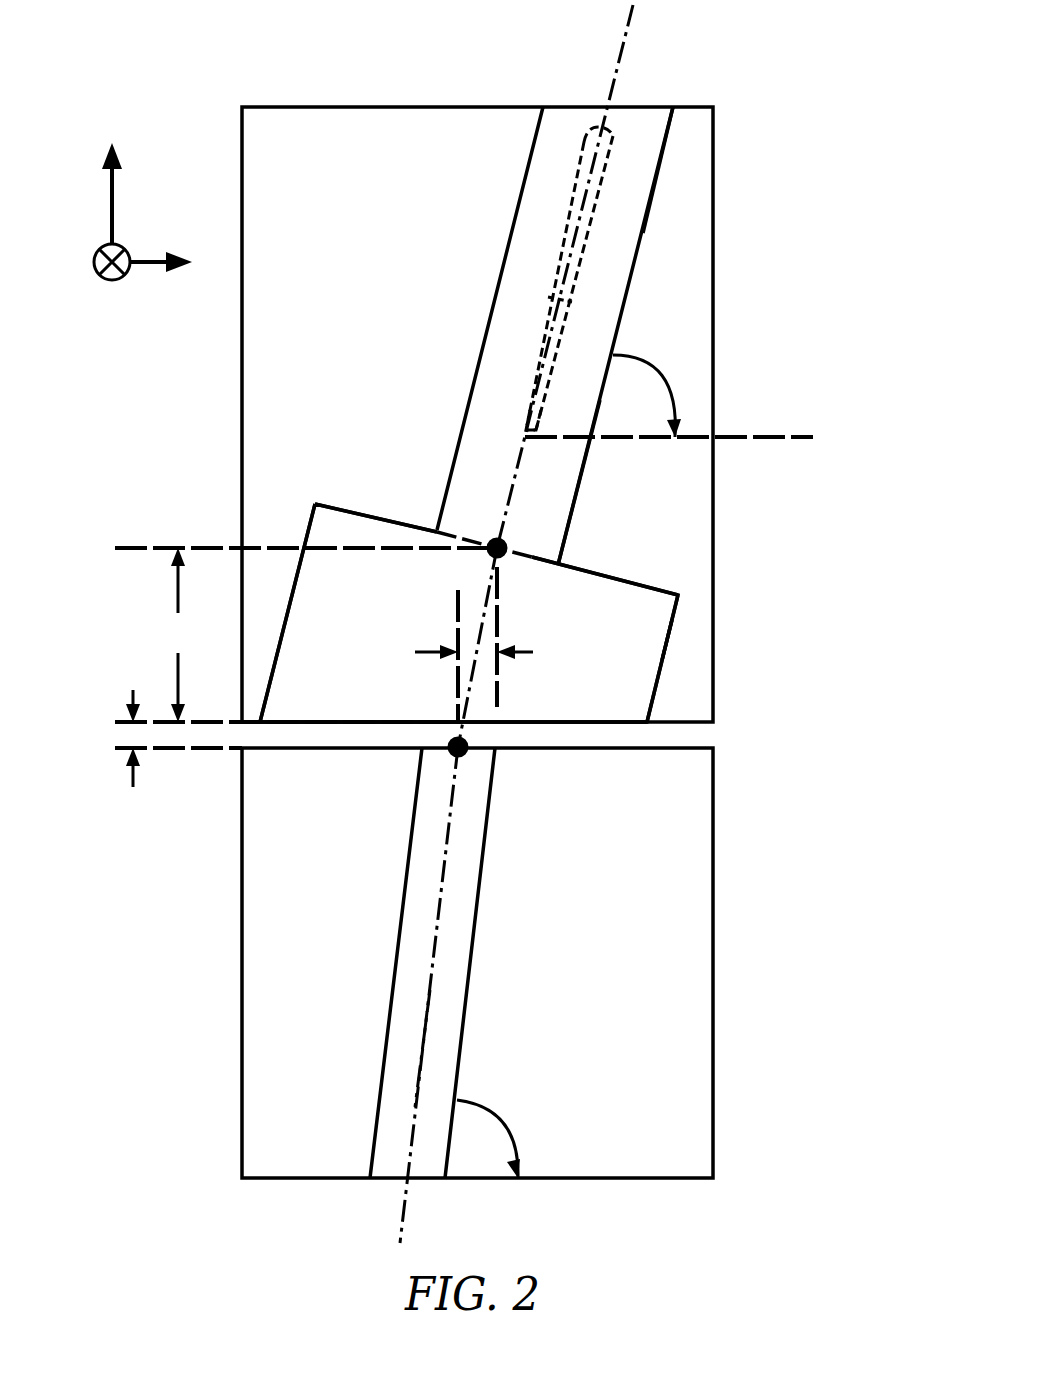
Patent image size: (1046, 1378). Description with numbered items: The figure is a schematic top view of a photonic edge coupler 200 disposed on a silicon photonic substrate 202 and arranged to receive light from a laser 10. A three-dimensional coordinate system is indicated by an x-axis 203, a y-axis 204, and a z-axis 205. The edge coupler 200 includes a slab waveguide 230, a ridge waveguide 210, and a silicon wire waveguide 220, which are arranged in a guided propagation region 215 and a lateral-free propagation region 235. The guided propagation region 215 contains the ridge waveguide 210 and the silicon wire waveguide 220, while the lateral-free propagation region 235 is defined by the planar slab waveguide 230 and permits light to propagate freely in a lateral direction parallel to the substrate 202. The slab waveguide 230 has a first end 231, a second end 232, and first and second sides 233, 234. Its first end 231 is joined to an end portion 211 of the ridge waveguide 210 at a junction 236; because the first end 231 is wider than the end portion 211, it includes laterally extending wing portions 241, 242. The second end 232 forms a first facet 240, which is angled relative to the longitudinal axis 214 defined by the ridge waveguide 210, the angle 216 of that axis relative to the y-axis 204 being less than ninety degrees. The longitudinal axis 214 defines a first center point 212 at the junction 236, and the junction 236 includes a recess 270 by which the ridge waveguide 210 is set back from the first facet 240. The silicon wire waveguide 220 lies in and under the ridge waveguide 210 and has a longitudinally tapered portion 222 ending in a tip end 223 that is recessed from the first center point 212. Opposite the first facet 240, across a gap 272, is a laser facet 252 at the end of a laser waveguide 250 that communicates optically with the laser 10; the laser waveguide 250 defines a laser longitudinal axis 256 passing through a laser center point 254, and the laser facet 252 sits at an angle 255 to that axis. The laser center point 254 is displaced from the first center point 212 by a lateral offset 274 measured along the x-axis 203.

The laser 10 is at (715, 1057).
The photonic edge coupler 200 is at (752, 100).
The silicon photonic substrate 202 is at (715, 193).
The x-axis 203 is at (232, 249).
The y-axis 204 is at (101, 178).
The z-axis 205 is at (108, 281).
The ridge waveguide 210 is at (612, 242).
The end portion 211 is at (552, 490).
The first center point 212 is at (492, 543).
The longitudinal axis 214 is at (617, 63).
The guided propagation region 215 is at (650, 235).
The angle 216 is at (665, 380).
The silicon wire waveguide 220 is at (562, 242).
The longitudinally tapered portion 222 is at (537, 352).
The tip end 223 is at (525, 418).
The slab waveguide 230 is at (650, 615).
The first end 231 is at (330, 503).
The second end 232 is at (345, 722).
The first side 233 is at (308, 527).
The second side 234 is at (664, 657).
The lateral-free propagation region 235 is at (684, 640).
The junction 236 is at (528, 557).
The first facet 240 is at (297, 722).
The wing portion 241 is at (362, 500).
The wing portion 242 is at (642, 572).
The laser waveguide 250 is at (387, 1013).
The laser facet 252 is at (466, 746).
The laser center point 254 is at (464, 755).
The angle 255 is at (507, 1120).
The laser longitudinal axis 256 is at (415, 1107).
The recess 270 is at (201, 647).
The gap 272 is at (154, 810).
The lateral offset 274 is at (584, 669).